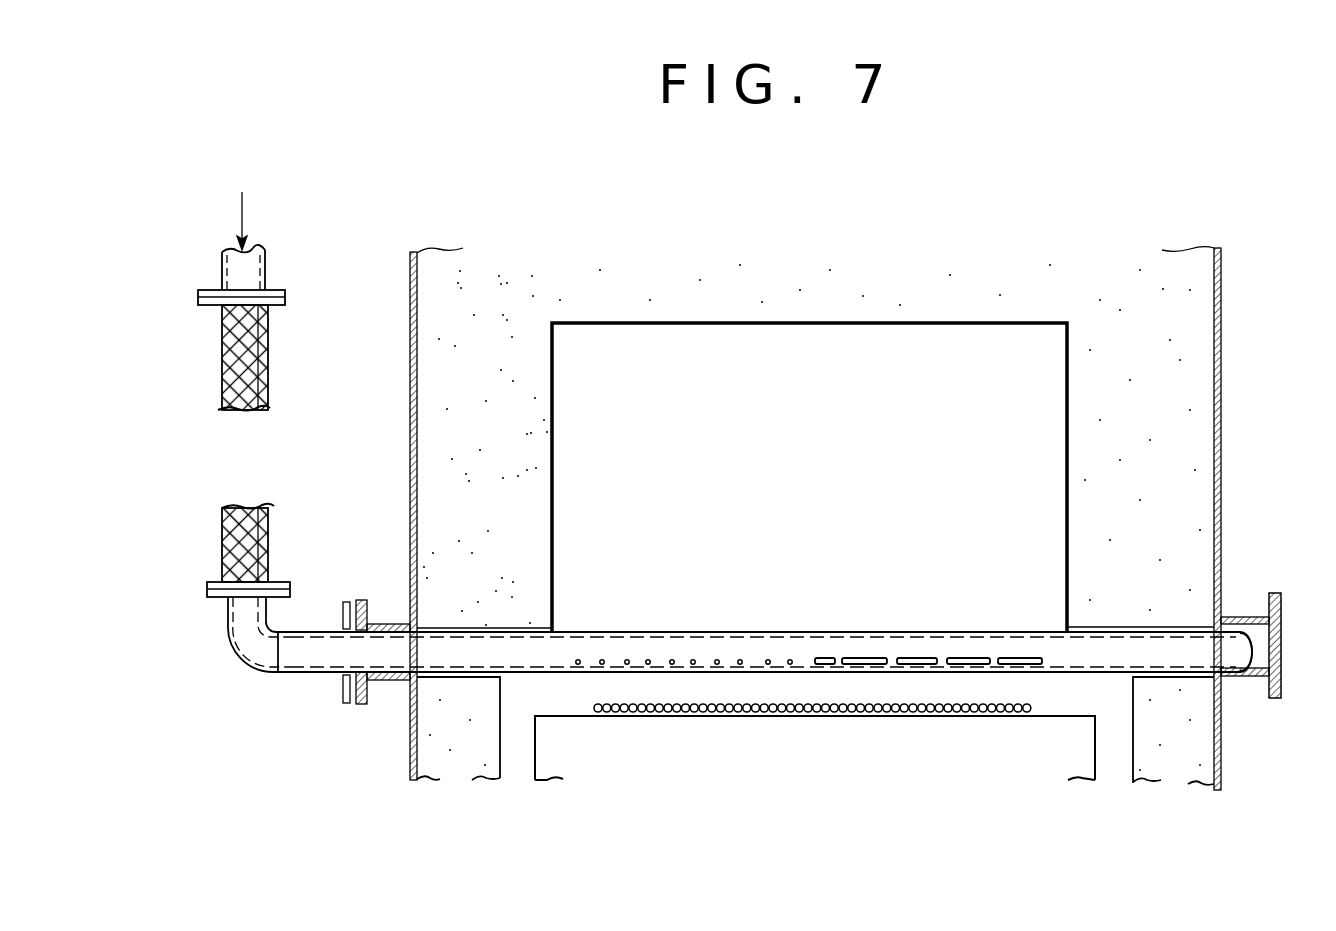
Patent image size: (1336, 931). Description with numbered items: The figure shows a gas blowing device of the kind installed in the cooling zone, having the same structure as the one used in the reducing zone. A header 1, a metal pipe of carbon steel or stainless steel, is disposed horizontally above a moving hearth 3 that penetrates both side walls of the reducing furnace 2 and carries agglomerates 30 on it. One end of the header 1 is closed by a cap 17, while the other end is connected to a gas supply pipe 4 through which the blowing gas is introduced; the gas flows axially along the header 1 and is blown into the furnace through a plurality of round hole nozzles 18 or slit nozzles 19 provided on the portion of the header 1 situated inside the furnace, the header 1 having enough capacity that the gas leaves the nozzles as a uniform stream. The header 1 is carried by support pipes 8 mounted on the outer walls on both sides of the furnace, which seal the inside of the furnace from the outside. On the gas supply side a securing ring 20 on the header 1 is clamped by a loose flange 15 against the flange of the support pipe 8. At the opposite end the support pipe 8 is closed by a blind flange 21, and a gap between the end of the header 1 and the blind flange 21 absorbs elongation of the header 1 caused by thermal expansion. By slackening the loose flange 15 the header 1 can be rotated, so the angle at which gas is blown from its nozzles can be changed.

The header 1 is at (645, 632).
The reducing furnace 2 is at (1232, 397).
The moving hearth 3 is at (572, 748).
The gas supply pipe 4 is at (228, 613).
The support pipe 8 is at (388, 685).
The loose flange 15 is at (347, 707).
The cap 17 is at (1252, 668).
The round hole nozzles 18 is at (695, 662).
The slit nozzles 19 is at (868, 660).
The securing ring 20 is at (348, 600).
The blind flange 21 is at (1283, 615).
The agglomerates 30 is at (1010, 705).